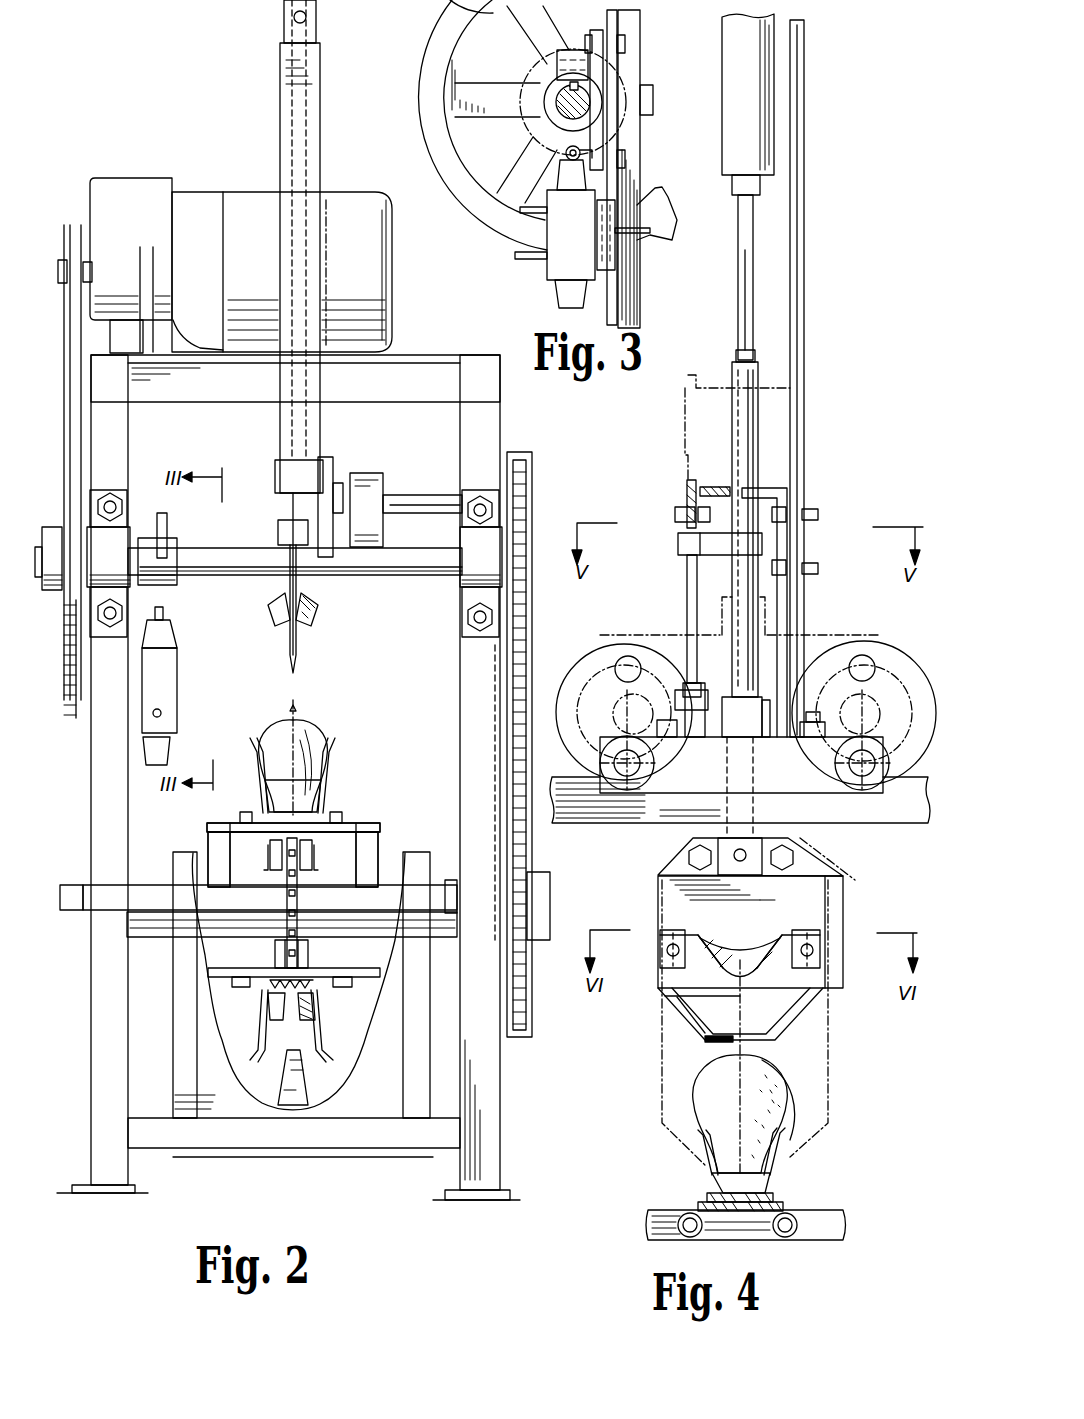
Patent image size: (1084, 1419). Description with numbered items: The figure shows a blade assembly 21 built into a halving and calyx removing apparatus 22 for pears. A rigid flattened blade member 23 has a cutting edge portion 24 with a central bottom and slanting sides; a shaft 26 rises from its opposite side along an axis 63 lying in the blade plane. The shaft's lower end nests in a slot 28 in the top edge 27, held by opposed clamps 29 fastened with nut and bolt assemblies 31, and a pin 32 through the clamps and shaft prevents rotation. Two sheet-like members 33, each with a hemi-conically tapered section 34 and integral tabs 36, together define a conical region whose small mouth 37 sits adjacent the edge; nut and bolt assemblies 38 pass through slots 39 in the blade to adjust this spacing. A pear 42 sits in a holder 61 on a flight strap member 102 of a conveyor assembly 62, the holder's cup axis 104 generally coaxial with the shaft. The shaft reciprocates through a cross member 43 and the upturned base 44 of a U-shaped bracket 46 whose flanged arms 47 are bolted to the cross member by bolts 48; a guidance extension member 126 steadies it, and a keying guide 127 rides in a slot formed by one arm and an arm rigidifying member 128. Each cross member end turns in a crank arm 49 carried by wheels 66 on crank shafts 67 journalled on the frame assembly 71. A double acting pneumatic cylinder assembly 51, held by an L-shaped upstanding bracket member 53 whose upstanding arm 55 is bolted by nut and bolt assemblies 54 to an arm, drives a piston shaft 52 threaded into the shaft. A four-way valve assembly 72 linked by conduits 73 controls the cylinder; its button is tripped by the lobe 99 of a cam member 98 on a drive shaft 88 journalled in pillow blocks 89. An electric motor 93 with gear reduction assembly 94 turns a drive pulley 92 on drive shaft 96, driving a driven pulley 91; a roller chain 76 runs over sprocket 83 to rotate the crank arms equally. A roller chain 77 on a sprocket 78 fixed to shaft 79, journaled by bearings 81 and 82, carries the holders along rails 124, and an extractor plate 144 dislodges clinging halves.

In FIG. 4, the blade assembly 21 is at (820, 855).
In FIG. 4, the halving and calyx removing apparatus 22 is at (809, 427).
In FIG. 2, the blade member 23 is at (300, 632).
In FIG. 4, the blade member 23 is at (850, 900).
In FIG. 4, the cutting edge portion 24 is at (800, 1020).
In FIG. 4, the shaft 26 is at (734, 400).
In FIG. 4, the top edge 27 is at (798, 842).
In FIG. 4, the slot 28 is at (762, 875).
In FIG. 4, the clamps 29 is at (830, 867).
In FIG. 4, the nut and bolt assemblies 31 is at (692, 858).
In FIG. 4, the pin 32 is at (738, 850).
In FIG. 2, the sheet-like members 33 is at (268, 608).
In FIG. 4, the sheet-like members 33 is at (665, 1000).
In FIG. 4, the hemi-conically tapered section 34 is at (740, 945).
In FIG. 4, the tabs 36 is at (690, 935).
In FIG. 4, the small mouth 37 is at (745, 998).
In FIG. 4, the nut and bolt assembly 38 is at (667, 950).
In FIG. 4, the slots 39 is at (672, 932).
In FIG. 2, the pear 42 is at (323, 740).
In FIG. 4, the pear 42 is at (785, 1096).
In FIG. 4, the cross member 43 is at (717, 777).
In FIG. 4, the upturned base 44 is at (787, 490).
In FIG. 4, the U-shaped bracket 46 is at (790, 602).
In FIG. 4, the flanged arms 47 is at (788, 648).
In FIG. 4, the bolts 48 is at (690, 737).
In FIG. 4, the crank arms 49 is at (600, 761).
In FIG. 4, the double acting pneumatic cylinder assembly 51 is at (722, 66).
In FIG. 4, the piston shaft 52 is at (738, 292).
In FIG. 4, the L-shaped upstanding bracket member 53 is at (808, 230).
In FIG. 4, the nut and bolt assemblies 54 is at (820, 564).
In FIG. 4, the upstanding arm 55 is at (798, 298).
In FIG. 2, the holder 61 is at (340, 768).
In FIG. 4, the holder 61 is at (775, 1178).
In FIG. 2, the conveyor assembly 62 is at (352, 797).
In FIG. 4, the axis 63 is at (700, 1003).
In FIG. 4, the wheels 66 is at (597, 662).
In FIG. 4, the crank shaft 67 is at (610, 702).
In FIG. 2, the frame assembly 71 is at (90, 1080).
In FIG. 2, the four-way valve assembly 72 is at (178, 730).
In FIG. 3, the four-way valve assembly 72 is at (553, 275).
In FIG. 2, the conduits 73 is at (161, 712).
In FIG. 3, the conduits 73 is at (525, 208).
In FIG. 2, the roller chain 76 is at (526, 640).
In FIG. 2, the roller chain 77 is at (312, 845).
In FIG. 4, the roller chain 77 is at (830, 1237).
In FIG. 2, the sprocket 78 is at (282, 858).
In FIG. 2, the shaft 79 is at (164, 613).
In FIG. 2, the bearing 81 is at (80, 918).
In FIG. 2, the bearing 82 is at (450, 888).
In FIG. 2, the sprocket 83 is at (543, 895).
In FIG. 2, the drive shaft 88 is at (241, 554).
In FIG. 2, the pillow blocks 89 is at (115, 535).
In FIG. 2, the driven pulley 91 is at (54, 600).
In FIG. 2, the drive pulley 92 is at (60, 292).
In FIG. 2, the electric motor 93 is at (232, 192).
In FIG. 2, the gear reduction assembly 94 is at (132, 178).
In FIG. 2, the drive shaft 96 is at (58, 262).
In FIG. 2, the cam member 98 is at (178, 530).
In FIG. 2, the lobe 99 is at (168, 512).
In FIG. 3, the lobe 99 is at (570, 50).
In FIG. 2, the flight strap member 102 is at (380, 830).
In FIG. 2, the axis 104 is at (277, 722).
In FIG. 4, the axis 104 is at (636, 1117).
In FIG. 2, the rails 124 is at (370, 837).
In FIG. 4, the guidance extension member 126 is at (765, 740).
In FIG. 4, the keying guide 127 is at (690, 541).
In FIG. 4, the arm rigidifying member 128 is at (688, 580).
In FIG. 2, the extractor plate 144 is at (300, 1082).